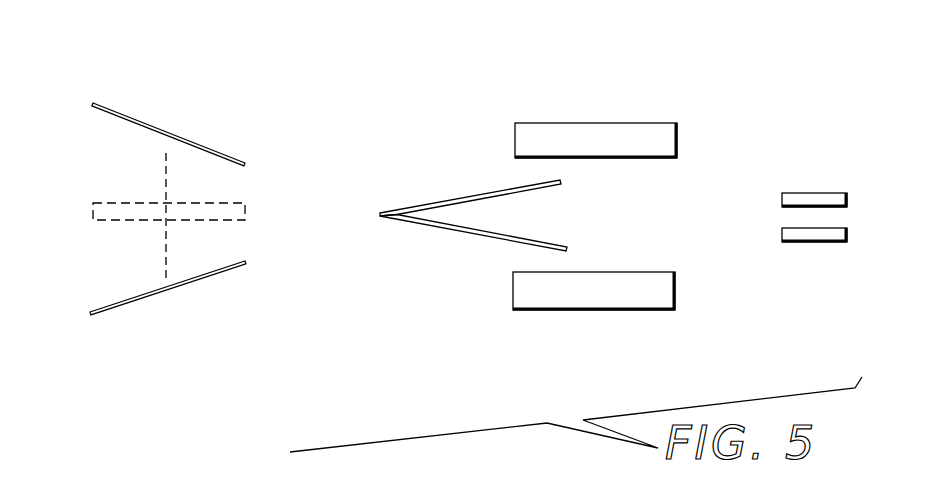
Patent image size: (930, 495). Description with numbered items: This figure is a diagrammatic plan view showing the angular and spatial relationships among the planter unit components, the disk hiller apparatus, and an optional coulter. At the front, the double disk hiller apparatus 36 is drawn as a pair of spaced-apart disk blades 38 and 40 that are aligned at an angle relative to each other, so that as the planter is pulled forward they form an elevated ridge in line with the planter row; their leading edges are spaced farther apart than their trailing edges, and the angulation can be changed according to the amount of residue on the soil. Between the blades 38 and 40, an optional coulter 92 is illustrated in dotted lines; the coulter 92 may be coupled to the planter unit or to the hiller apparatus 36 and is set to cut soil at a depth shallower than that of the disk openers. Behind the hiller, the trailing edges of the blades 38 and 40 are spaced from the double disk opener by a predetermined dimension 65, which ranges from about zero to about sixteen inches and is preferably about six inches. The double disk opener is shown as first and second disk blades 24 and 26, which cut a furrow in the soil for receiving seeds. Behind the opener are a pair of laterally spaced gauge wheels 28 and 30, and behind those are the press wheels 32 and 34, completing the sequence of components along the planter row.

The double disk hiller apparatus 36 is at (70, 89).
The disk blade 40 is at (238, 156).
The disk blade 38 is at (230, 273).
The coulter 92 is at (153, 226).
The dimension 65 is at (368, 213).
The second disk blade 26 is at (455, 195).
The first disk blade 24 is at (473, 233).
The gauge wheel 30 is at (655, 143).
The gauge wheel 28 is at (663, 290).
The press wheel 34 is at (812, 202).
The press wheel 32 is at (818, 235).